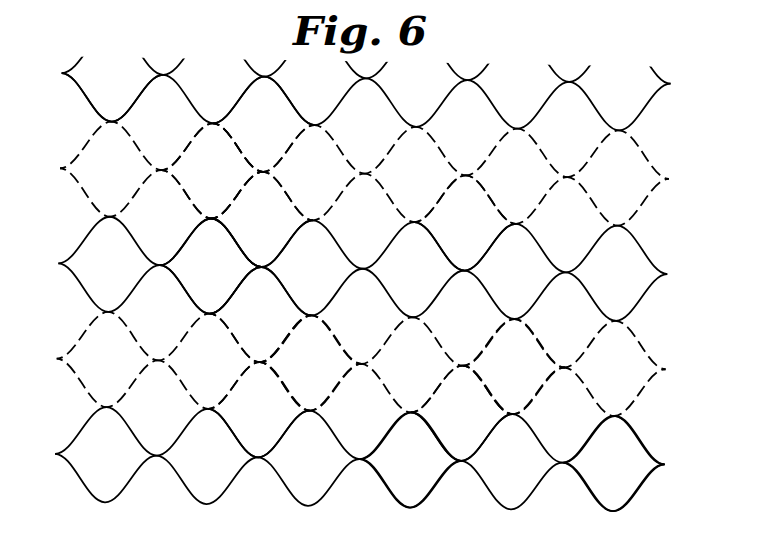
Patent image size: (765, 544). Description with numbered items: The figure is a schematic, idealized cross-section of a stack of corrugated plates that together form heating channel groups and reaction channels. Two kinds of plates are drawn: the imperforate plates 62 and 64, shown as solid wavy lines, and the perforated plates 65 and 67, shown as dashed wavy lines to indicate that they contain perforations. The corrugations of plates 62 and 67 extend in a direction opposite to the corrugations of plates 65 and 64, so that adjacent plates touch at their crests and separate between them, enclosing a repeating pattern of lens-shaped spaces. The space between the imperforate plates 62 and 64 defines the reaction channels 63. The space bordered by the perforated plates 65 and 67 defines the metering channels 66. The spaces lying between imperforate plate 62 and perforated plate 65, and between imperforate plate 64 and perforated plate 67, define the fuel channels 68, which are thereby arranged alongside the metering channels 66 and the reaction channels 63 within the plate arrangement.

The imperforate plate 62 is at (83, 99).
The imperforate plate 64 is at (84, 240).
The perforated plate 65 is at (86, 134).
The perforated plate 67 is at (76, 180).
The reaction channel 63 is at (129, 91).
The metering channel 66 is at (230, 182).
The fuel channel 68 is at (282, 132).